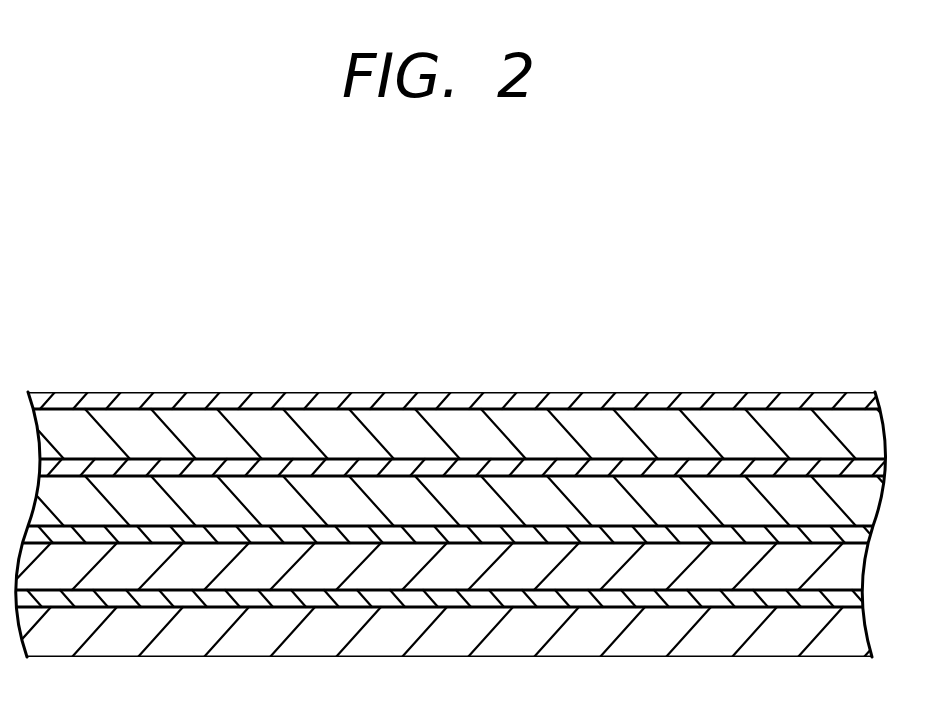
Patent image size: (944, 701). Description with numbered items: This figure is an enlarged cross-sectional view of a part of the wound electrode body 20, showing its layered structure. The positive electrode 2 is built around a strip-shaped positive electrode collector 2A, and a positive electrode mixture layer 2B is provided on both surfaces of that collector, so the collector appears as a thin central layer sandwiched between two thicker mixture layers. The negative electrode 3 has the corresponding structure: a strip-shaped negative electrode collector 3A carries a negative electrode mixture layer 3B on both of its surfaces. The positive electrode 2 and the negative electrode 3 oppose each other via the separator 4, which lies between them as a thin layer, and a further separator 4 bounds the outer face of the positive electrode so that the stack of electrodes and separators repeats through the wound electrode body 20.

The wound electrode body 20 is at (677, 242).
The positive electrode 2 is at (93, 278).
The positive electrode collector 2A is at (122, 465).
The positive electrode mixture layer 2B is at (202, 500).
The negative electrode 3 is at (423, 278).
The negative electrode collector 3A is at (443, 600).
The negative electrode mixture layer 3B is at (535, 632).
The separator 4 is at (750, 537).